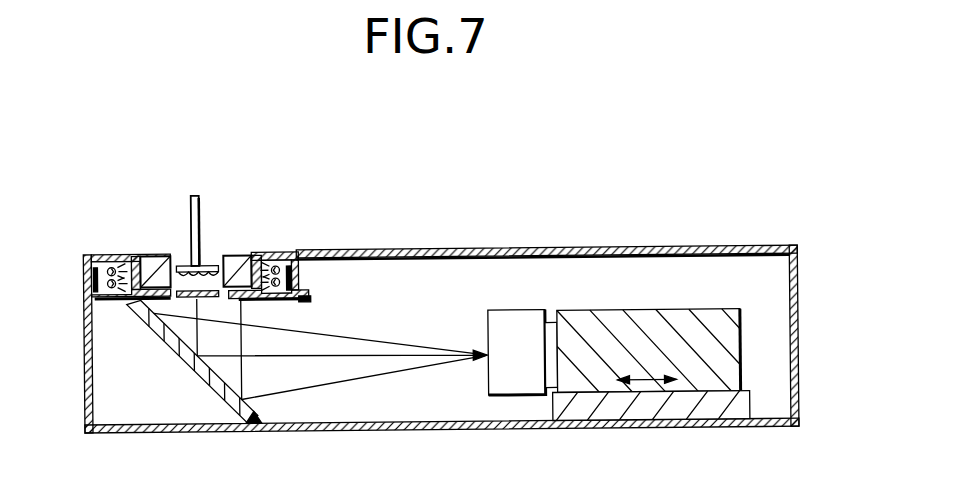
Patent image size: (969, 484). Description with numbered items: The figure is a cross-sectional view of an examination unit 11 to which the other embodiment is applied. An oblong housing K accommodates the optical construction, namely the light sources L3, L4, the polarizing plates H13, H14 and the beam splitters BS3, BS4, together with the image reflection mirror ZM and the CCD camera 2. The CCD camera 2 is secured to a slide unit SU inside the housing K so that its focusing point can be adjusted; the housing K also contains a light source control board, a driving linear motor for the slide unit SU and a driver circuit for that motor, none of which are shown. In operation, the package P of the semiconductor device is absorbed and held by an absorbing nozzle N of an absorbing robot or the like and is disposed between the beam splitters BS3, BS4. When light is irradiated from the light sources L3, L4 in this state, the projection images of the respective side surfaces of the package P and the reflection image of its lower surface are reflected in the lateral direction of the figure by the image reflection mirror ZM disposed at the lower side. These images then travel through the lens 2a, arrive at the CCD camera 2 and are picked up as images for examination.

The examination unit 11 is at (397, 207).
The housing K is at (450, 249).
The light source L3 is at (112, 256).
The light source L4 is at (293, 255).
The polarizing plate H13 is at (138, 256).
The polarizing plate H14 is at (258, 256).
The beam splitter BS3 is at (153, 257).
The beam splitter BS4 is at (242, 257).
The absorbing nozzle N is at (196, 196).
The package P is at (178, 267).
The image reflection mirror ZM is at (178, 356).
The CCD camera 2 is at (706, 313).
The lens 2a is at (515, 318).
The slide unit SU is at (589, 418).